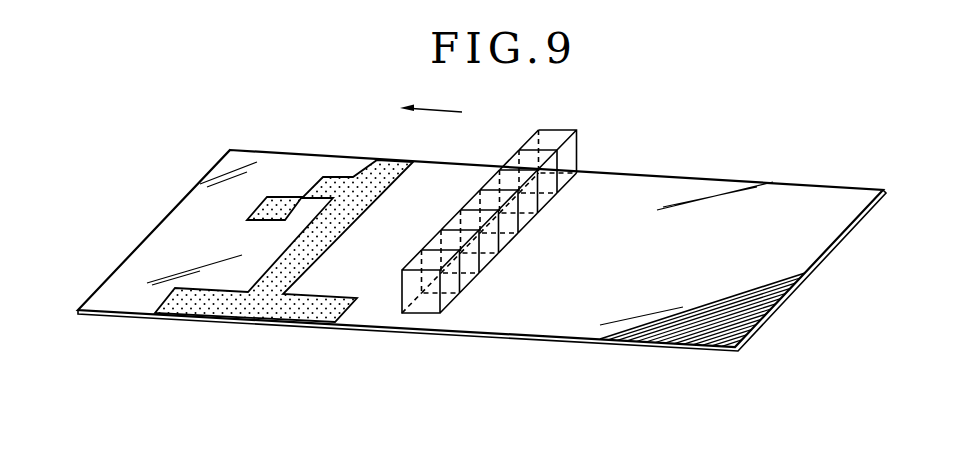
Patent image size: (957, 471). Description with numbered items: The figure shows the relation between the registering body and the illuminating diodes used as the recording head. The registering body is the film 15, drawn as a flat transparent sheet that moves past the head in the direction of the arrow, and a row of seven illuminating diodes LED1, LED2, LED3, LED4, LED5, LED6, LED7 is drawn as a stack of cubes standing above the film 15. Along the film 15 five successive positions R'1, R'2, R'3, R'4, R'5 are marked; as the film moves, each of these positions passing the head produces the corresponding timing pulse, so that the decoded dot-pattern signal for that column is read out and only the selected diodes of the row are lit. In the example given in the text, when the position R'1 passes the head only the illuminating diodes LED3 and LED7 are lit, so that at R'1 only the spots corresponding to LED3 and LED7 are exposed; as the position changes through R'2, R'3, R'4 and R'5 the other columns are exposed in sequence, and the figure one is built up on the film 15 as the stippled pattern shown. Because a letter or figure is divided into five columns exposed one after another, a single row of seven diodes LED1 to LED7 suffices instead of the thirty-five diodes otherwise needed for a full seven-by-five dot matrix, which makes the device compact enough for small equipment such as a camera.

The film 15 is at (805, 255).
The illuminating diode LED1 is at (567, 156).
The illuminating diode LED2 is at (547, 203).
The illuminating diode LED3 is at (527, 226).
The illuminating diode LED4 is at (513, 238).
The illuminating diode LED5 is at (493, 260).
The illuminating diode LED6 is at (470, 280).
The illuminating diode LED7 is at (447, 303).
The position on the registering body R'1 is at (327, 146).
The position on the registering body R'2 is at (359, 146).
The position on the registering body R'3 is at (393, 146).
The position on the registering body R'4 is at (428, 146).
The position on the registering body R'5 is at (463, 146).